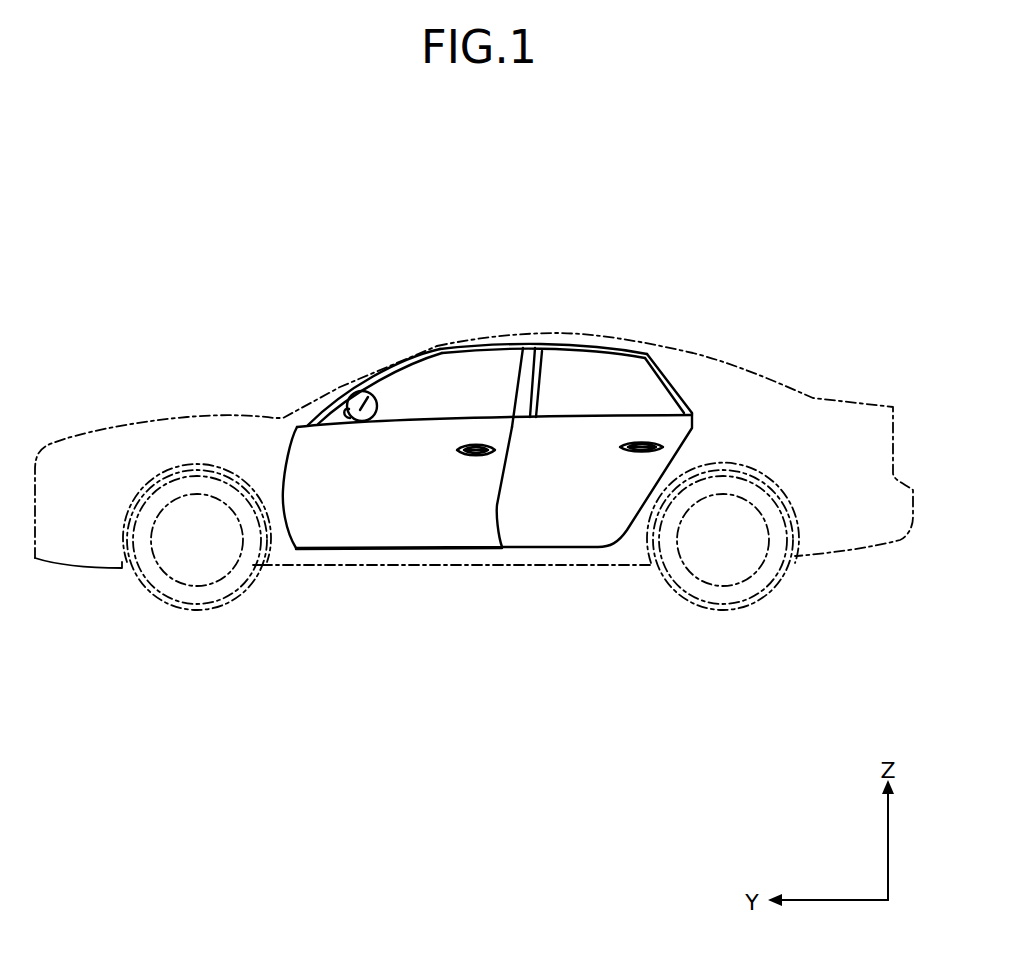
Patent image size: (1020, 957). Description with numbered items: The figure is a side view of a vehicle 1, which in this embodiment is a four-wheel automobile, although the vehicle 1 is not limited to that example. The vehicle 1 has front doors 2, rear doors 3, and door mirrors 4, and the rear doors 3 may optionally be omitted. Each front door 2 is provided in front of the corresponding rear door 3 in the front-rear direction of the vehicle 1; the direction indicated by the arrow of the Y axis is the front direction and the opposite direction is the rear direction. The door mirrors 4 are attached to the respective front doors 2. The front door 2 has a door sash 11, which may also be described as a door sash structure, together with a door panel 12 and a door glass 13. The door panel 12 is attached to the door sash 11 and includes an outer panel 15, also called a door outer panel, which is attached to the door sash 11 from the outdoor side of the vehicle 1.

The vehicle 1 is at (205, 252).
The front door 2 is at (442, 340).
The rear door 3 is at (622, 340).
The door mirror 4 is at (360, 389).
The door sash 11 is at (497, 340).
The door panel 12 is at (357, 562).
The door glass 13 is at (407, 385).
The outer panel 15 is at (447, 533).